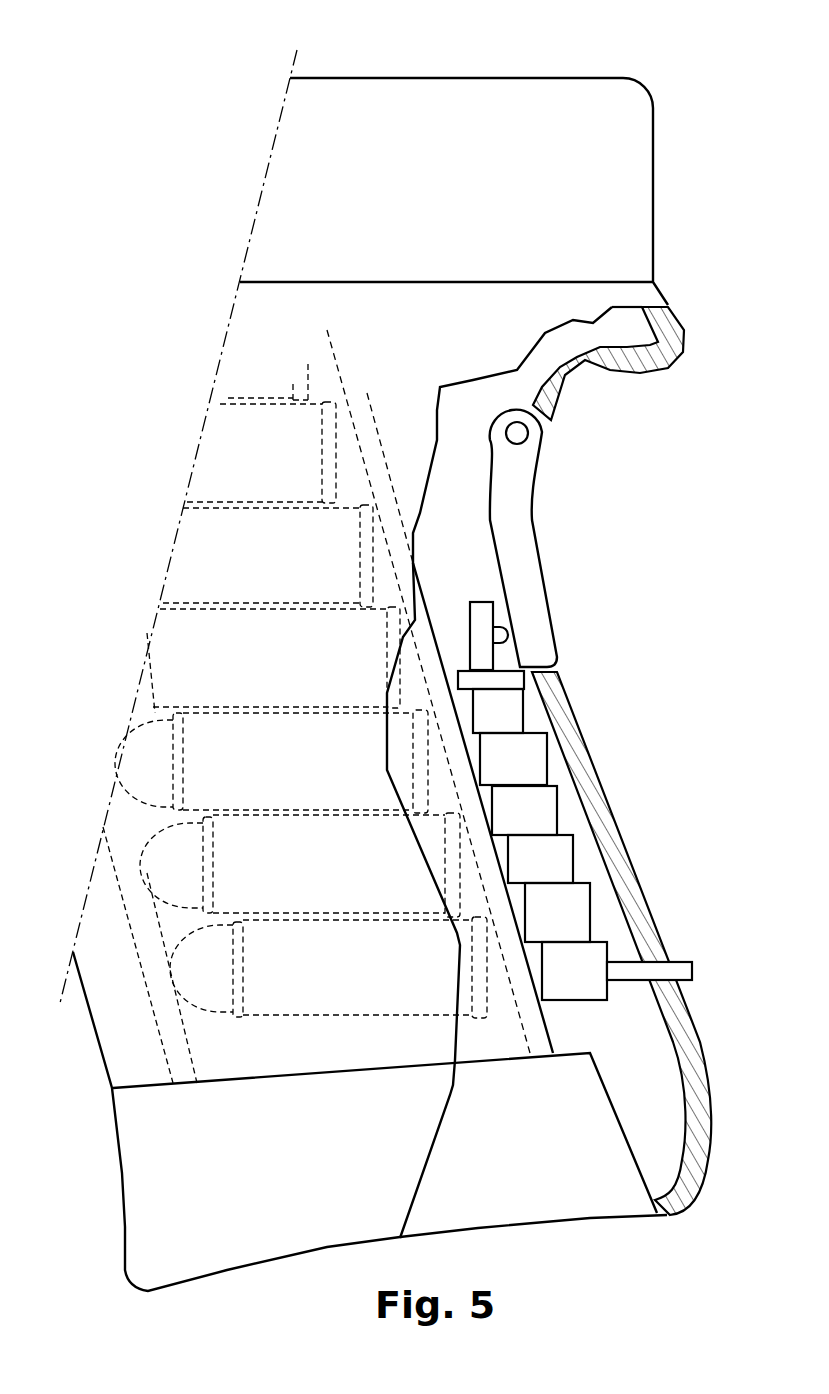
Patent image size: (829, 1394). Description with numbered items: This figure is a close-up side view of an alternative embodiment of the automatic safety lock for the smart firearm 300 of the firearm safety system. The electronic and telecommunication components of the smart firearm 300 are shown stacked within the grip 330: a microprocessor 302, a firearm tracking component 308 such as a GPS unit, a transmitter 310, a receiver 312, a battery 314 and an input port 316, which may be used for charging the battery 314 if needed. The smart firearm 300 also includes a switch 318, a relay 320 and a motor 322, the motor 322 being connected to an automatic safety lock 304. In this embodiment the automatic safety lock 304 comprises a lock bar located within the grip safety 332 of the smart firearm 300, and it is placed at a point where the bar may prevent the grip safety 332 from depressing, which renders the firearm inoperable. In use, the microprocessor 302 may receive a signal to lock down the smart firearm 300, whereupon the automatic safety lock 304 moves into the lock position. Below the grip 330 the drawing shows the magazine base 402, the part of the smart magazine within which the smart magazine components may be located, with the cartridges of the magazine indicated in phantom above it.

The smart firearm component 300 is at (652, 68).
The grip 330 is at (467, 450).
The grip safety 332 is at (515, 503).
The motor 322 is at (483, 617).
The automatic safety lock 304 is at (508, 636).
The relay 320 is at (503, 682).
The switch 318 is at (517, 712).
The microprocessor 302 is at (530, 760).
The firearm tracking component 308 is at (543, 810).
The transmitter 310 is at (557, 860).
The receiver 312 is at (570, 912).
The battery 314 is at (593, 960).
The input port 316 is at (667, 972).
The magazine base 402 is at (560, 1157).